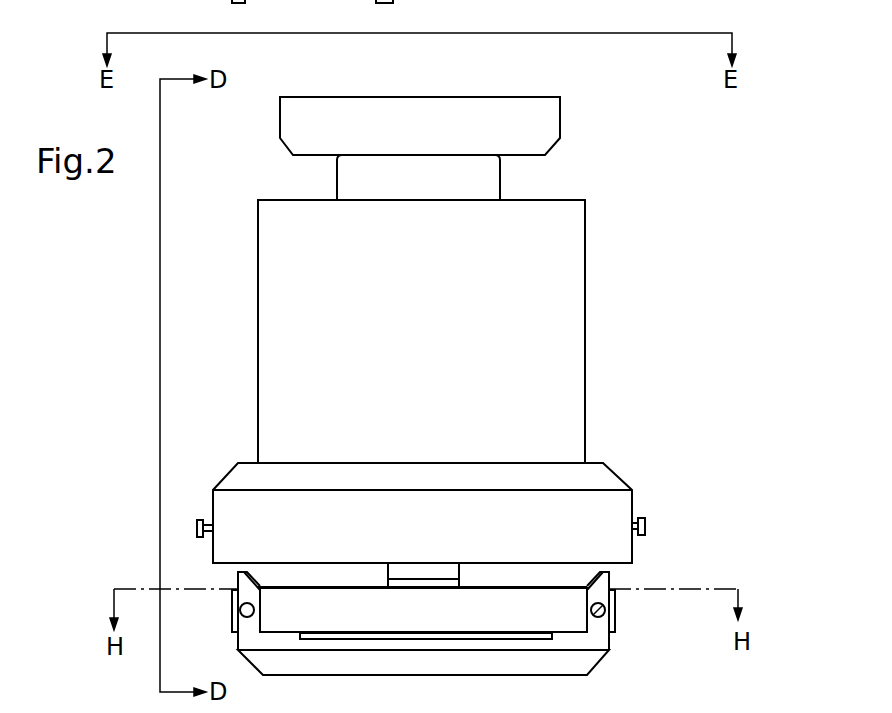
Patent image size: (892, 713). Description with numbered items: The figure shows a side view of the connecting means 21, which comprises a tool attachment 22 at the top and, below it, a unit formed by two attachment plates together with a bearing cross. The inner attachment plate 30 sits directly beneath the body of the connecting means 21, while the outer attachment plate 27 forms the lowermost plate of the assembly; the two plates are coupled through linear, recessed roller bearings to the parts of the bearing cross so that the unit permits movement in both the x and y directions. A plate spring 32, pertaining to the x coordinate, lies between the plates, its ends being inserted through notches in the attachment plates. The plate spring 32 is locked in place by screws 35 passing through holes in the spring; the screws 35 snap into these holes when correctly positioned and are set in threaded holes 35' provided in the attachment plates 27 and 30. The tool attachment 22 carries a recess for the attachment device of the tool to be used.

The connecting means 21 is at (644, 360).
The tool attachment 22 is at (560, 120).
The outer attachment plate 27 is at (592, 650).
The inner attachment plate 30 is at (618, 497).
The plate spring 32 is at (295, 620).
The screws 35 is at (428, 557).
The threaded holes 35' is at (224, 611).